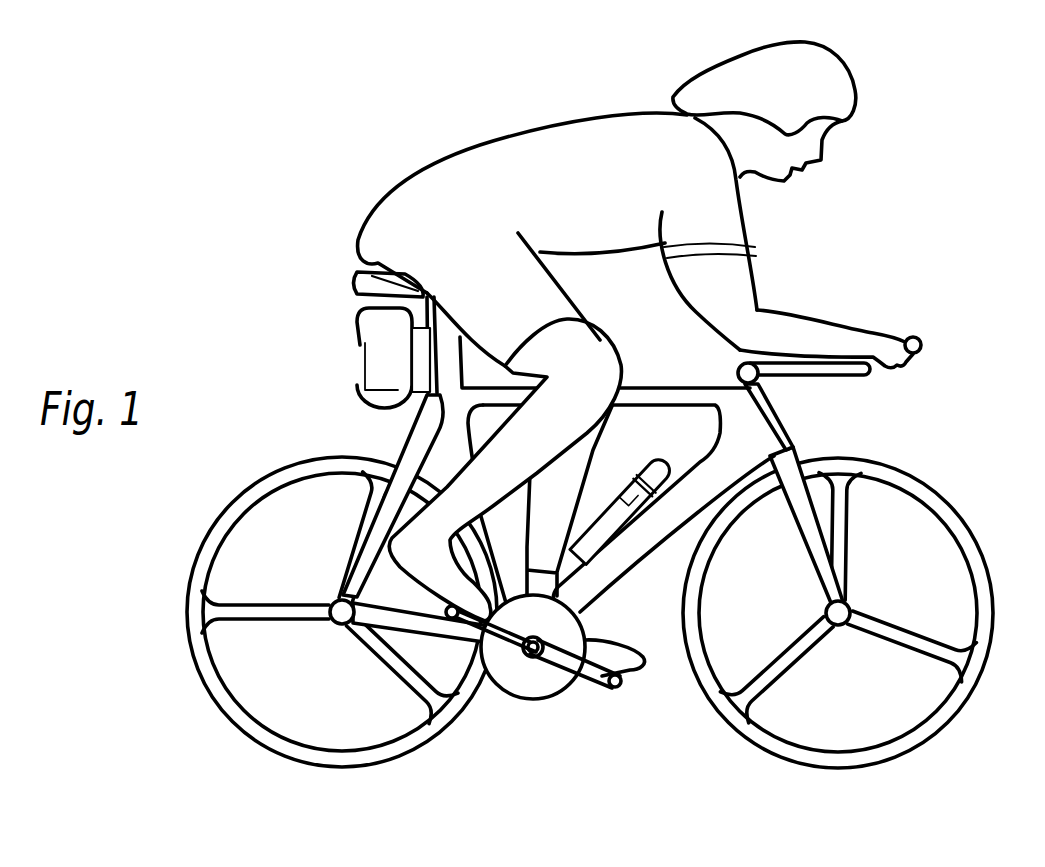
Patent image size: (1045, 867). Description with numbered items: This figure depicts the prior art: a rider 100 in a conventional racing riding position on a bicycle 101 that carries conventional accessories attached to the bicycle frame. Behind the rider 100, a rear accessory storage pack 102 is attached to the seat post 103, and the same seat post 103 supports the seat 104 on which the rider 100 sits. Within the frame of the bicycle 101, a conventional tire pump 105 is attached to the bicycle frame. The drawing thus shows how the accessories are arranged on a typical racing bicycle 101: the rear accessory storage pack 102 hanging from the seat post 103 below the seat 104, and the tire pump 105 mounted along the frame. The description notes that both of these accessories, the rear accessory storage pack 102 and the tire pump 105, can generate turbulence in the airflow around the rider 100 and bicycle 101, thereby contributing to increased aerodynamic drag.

The rider 100 is at (565, 145).
The bicycle 101 is at (762, 425).
The rear accessory storage pack 102 is at (360, 392).
The seat post 103 is at (448, 377).
The seat 104 is at (355, 280).
The tire pump 105 is at (650, 478).